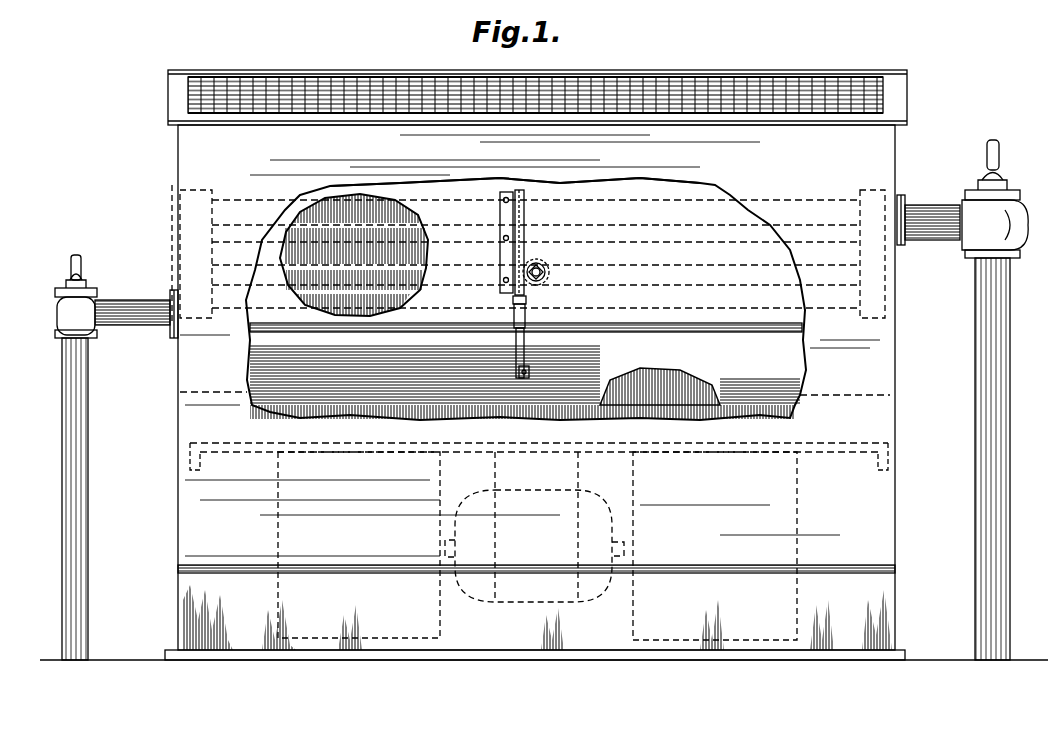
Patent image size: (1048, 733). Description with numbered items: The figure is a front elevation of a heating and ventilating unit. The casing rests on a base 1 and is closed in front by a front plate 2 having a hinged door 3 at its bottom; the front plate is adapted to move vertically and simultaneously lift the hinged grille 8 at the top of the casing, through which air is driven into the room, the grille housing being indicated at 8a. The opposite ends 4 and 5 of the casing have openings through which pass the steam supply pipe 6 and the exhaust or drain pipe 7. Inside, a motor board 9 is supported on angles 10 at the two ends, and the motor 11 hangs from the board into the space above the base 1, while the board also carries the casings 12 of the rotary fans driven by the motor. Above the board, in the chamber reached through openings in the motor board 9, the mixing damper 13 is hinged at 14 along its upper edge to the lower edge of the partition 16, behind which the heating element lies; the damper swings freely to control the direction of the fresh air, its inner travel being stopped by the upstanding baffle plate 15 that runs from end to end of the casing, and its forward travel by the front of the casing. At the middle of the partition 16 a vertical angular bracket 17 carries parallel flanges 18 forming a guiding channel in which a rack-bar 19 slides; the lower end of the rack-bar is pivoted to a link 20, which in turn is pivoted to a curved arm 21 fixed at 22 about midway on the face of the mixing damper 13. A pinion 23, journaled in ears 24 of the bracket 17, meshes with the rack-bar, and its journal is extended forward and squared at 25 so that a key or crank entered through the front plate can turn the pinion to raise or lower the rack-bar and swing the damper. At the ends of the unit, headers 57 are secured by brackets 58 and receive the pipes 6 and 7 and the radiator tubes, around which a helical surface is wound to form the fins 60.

The base 1 is at (402, 655).
The front plate 2 is at (190, 522).
The hinged door 3 is at (262, 640).
The casing end 4 is at (178, 372).
The casing end 5 is at (895, 361).
The steam supply pipe 6 is at (975, 290).
The exhaust or drain pipe 7 is at (126, 300).
The hinged grille 8 is at (200, 98).
The grille housing 8a is at (212, 70).
The motor board 9 is at (747, 448).
The angles 10 is at (200, 462).
The motor 11 is at (600, 498).
The fan casings 12 is at (278, 535).
The mixing damper 13 is at (795, 418).
The hinge 14 is at (700, 332).
The baffle plate 15 is at (630, 395).
The partition 16 is at (632, 186).
The angular bracket 17 is at (500, 214).
The parallel flanges 18 is at (528, 234).
The rack-bar 19 is at (528, 300).
The link 20 is at (514, 310).
The curved arm 21 is at (516, 350).
The fixing point 22 is at (530, 370).
The pinion 23 is at (548, 267).
The ears 24 is at (526, 266).
The squared journal extension 25 is at (548, 276).
The headers 57 is at (210, 190).
The brackets 58 is at (180, 183).
The fins 60 is at (352, 300).